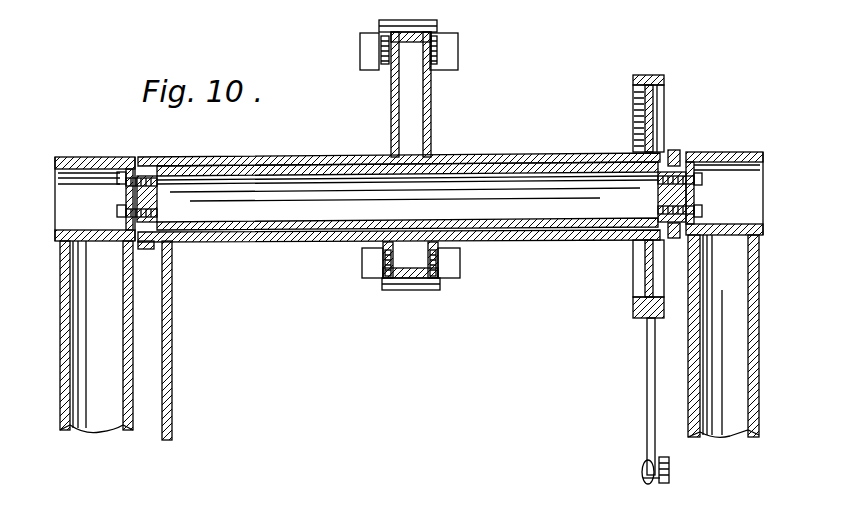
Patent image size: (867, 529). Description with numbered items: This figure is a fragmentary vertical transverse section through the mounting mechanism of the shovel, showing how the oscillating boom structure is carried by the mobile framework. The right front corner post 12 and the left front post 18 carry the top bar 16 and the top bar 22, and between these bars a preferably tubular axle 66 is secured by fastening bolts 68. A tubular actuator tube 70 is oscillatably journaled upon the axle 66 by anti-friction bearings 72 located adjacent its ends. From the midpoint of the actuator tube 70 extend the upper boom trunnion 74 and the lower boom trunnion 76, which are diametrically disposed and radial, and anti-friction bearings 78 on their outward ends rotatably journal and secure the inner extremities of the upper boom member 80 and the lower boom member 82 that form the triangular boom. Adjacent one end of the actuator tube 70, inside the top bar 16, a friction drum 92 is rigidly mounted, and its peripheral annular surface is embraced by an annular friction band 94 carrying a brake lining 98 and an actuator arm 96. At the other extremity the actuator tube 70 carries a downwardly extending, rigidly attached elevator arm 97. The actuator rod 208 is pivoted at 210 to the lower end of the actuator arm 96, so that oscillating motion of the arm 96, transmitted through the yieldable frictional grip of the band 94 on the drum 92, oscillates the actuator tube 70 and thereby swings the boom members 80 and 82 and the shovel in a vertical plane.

The front corner post 12 is at (759, 342).
The top bar 16 is at (728, 152).
The front post 18 is at (62, 362).
The top bar 22 is at (80, 157).
The tubular axle 66 is at (272, 165).
The fastening bolts 68 is at (124, 190).
The actuator tube 70 is at (488, 157).
The anti-friction bearings 72 is at (170, 245).
The upper boom trunnion 74 is at (431, 108).
The lower boom trunnion 76 is at (420, 265).
The anti-friction bearings 78 is at (437, 36).
The upper boom member 80 is at (458, 52).
The lower boom member 82 is at (458, 268).
The friction drum 92 is at (665, 104).
The annular friction band 94 is at (652, 75).
The actuator arm 96 is at (648, 392).
The elevator arm 97 is at (174, 378).
The brake lining 98 is at (636, 86).
The actuator rod 208 is at (664, 480).
The pivoted end 210 is at (670, 470).